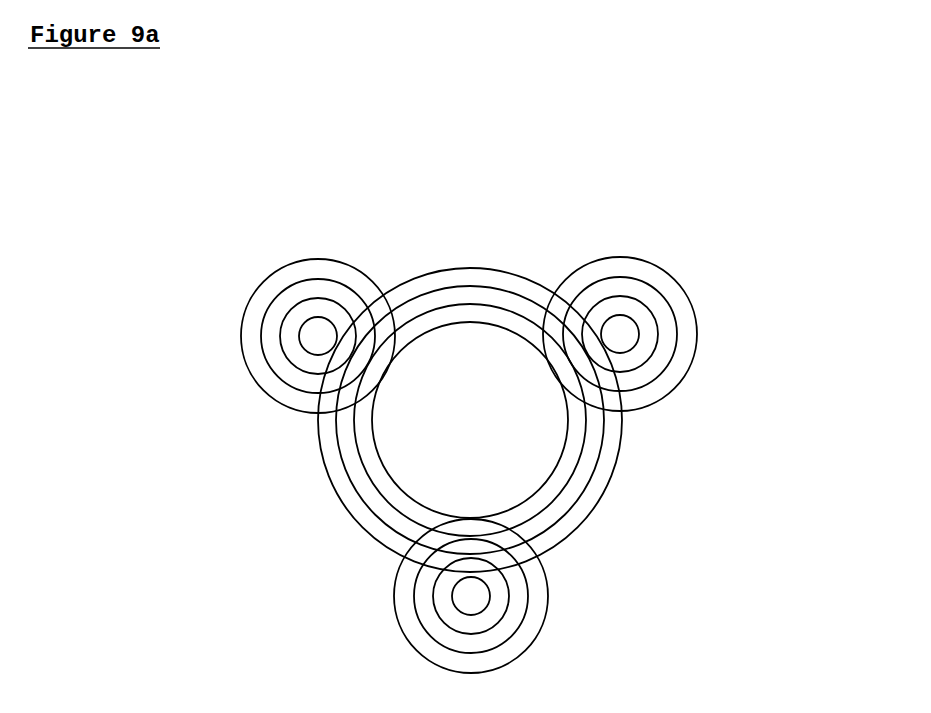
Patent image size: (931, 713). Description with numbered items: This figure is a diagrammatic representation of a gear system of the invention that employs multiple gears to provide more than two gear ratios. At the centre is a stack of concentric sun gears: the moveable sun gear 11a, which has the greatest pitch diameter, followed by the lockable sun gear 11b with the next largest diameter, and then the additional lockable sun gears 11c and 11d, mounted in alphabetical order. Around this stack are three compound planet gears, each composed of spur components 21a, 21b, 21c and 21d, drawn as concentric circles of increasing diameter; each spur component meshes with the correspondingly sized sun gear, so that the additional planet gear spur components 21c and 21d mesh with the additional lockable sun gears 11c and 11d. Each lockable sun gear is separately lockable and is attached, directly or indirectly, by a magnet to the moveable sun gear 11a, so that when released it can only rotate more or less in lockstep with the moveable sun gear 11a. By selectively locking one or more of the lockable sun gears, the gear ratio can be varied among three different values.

The moveable sun gear 11a is at (473, 268).
The lockable sun gear 11b is at (605, 430).
The additional lockable sun gear 11c is at (588, 456).
The additional lockable sun gear 11d is at (552, 477).
The spur component of compound gear 21a is at (300, 332).
The spur component of compound gear 21b is at (305, 300).
The additional spur component of compound gear 21c is at (273, 377).
The additional spur component of compound gear 21d is at (253, 303).